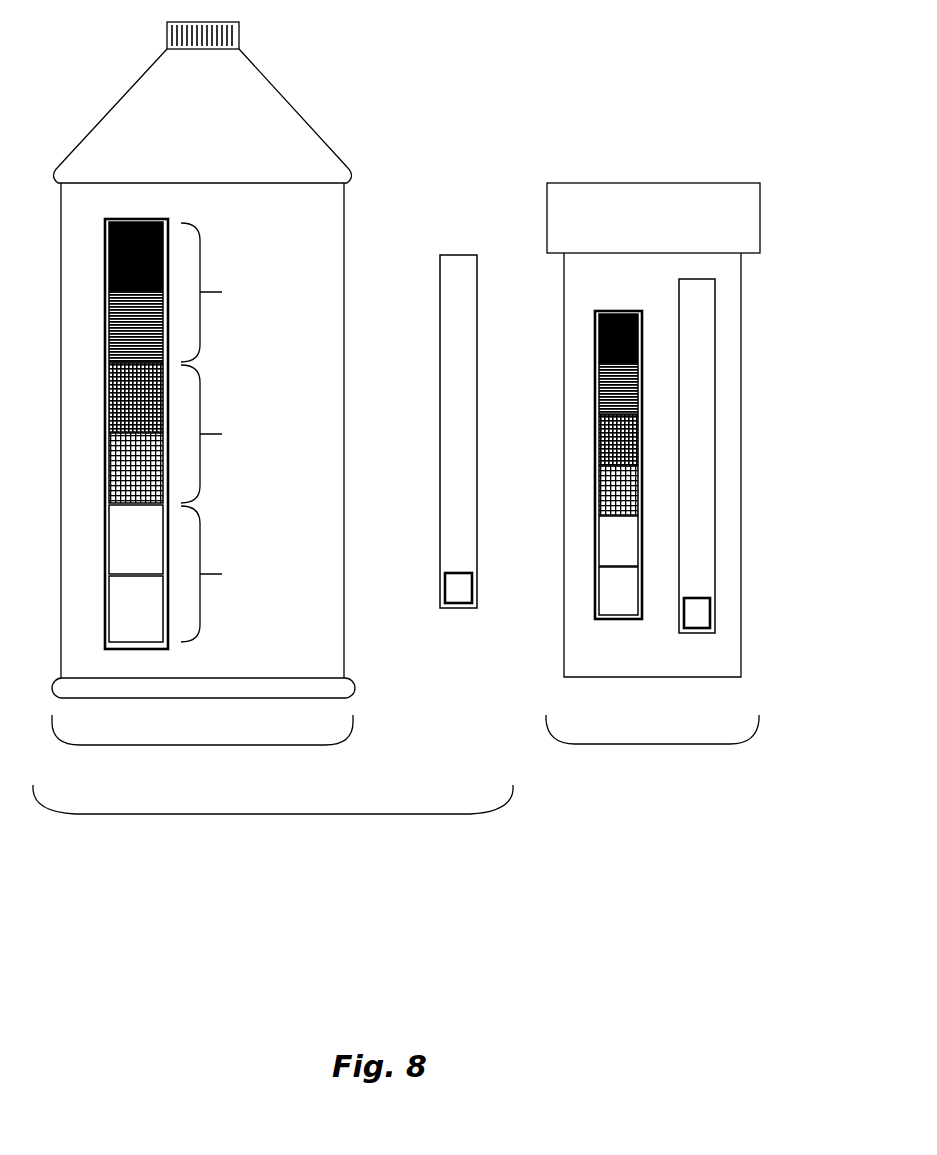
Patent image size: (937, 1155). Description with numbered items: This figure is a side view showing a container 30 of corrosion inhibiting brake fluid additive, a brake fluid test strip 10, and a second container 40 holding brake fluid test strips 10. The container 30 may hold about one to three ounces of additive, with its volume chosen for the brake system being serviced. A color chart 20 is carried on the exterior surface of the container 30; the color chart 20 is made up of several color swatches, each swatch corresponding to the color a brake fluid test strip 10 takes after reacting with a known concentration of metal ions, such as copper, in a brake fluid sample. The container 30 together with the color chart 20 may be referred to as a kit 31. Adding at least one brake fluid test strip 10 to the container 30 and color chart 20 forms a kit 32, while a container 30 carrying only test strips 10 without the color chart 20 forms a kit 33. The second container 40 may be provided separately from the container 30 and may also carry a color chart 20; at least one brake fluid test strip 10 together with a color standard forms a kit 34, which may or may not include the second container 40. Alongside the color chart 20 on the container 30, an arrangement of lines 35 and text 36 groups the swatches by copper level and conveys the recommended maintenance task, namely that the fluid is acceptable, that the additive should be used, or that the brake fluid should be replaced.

The brake fluid test strip 10 is at (478, 300).
The color chart 20 is at (107, 430).
The container 30 is at (335, 63).
The kit 31 is at (298, 745).
The kit 32 is at (273, 837).
The kit 33 is at (272, 814).
The kit 34 is at (653, 744).
The lines 35 is at (202, 347).
The text 36 is at (325, 447).
The second container 40 is at (712, 118).